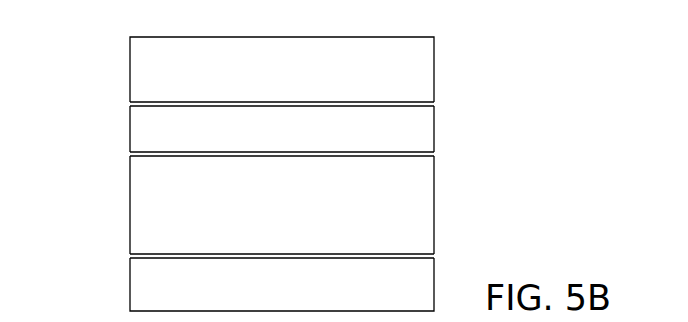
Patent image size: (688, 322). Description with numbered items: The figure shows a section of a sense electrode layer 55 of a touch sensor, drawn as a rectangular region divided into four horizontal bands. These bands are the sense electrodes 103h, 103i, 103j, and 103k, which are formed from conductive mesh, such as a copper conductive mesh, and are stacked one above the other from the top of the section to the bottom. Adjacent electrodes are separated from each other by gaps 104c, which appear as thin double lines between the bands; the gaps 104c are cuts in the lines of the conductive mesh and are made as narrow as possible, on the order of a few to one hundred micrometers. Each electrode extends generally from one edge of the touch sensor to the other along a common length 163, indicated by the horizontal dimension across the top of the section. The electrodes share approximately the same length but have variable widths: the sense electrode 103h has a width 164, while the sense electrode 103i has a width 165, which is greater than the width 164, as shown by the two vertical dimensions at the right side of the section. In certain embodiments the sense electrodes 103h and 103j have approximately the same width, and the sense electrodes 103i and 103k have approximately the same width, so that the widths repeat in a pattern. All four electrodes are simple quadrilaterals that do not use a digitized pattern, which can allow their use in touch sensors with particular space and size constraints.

The sense electrode layer 55 is at (483, 208).
The sense electrode 103h is at (157, 57).
The sense electrode 103i is at (152, 125).
The sense electrode 103j is at (148, 194).
The sense electrode 103k is at (152, 278).
The gaps 104c is at (434, 104).
The length 163 is at (130, 24).
The width 164 is at (448, 37).
The width 165 is at (448, 104).